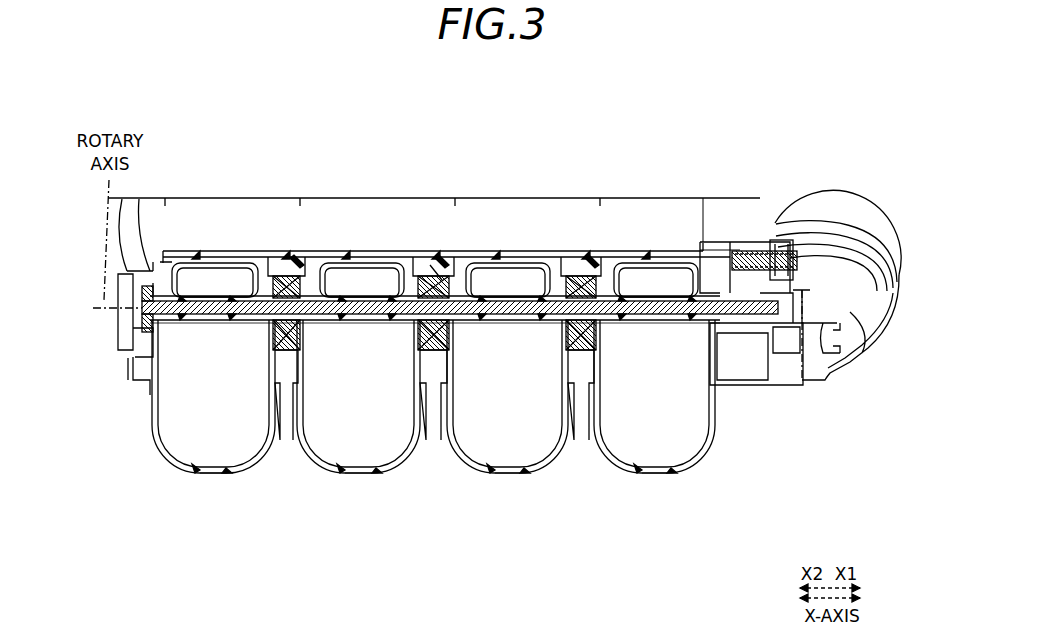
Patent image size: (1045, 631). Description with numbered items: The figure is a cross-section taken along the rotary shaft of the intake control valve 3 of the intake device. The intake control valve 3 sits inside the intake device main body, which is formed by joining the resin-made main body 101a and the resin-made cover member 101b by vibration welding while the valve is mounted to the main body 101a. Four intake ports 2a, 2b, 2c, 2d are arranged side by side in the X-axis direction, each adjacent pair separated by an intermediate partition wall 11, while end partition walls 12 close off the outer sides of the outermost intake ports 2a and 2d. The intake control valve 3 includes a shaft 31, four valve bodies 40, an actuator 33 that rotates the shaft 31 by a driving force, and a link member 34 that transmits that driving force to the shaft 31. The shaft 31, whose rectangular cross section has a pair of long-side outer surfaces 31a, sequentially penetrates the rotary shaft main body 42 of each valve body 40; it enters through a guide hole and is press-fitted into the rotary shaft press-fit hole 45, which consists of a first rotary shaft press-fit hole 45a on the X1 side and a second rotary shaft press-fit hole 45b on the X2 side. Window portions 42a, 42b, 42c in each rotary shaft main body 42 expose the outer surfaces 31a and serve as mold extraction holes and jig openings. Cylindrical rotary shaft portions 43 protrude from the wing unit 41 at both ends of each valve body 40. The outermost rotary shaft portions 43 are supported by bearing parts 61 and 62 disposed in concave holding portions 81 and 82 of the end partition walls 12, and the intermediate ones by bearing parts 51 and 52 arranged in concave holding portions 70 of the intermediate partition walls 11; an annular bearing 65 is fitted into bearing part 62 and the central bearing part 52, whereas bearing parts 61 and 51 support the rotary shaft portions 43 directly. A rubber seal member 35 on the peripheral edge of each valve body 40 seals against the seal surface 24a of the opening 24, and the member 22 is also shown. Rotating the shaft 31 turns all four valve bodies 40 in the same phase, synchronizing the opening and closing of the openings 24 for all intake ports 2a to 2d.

The intake control valve 3 is at (862, 187).
The intermediate partition wall 11 is at (286, 442).
The end partition wall 12 is at (140, 360).
The roller bottom 22 is at (265, 474).
The opening 24 is at (283, 252).
The seal surface 24a is at (206, 324).
The intake port 2a is at (652, 476).
The intake port 2b is at (503, 476).
The intake port 2c is at (356, 476).
The intake port 2d is at (206, 476).
The shaft 31 is at (823, 243).
The outer surface 31a is at (700, 248).
The actuator 33 is at (843, 235).
The link member 34 is at (800, 385).
The seal member 35 is at (180, 255).
The valve body 40 is at (442, 200).
The wing unit 41 is at (438, 219).
The rotary shaft main body 42 is at (168, 332).
The window portion 42a is at (350, 324).
The window portion 42b is at (256, 270).
The window portion 42c is at (208, 263).
The rotary shaft portion 43 is at (118, 333).
The rotary shaft press-fit hole 45 is at (435, 308).
The first rotary shaft press-fit hole 45a is at (252, 400).
The second rotary shaft press-fit hole 45b is at (435, 440).
The bearing part 51 is at (292, 278).
The bearing part 52 is at (440, 278).
The bearing part 61 is at (745, 250).
The bearing part 62 is at (131, 268).
The annular bearing 65 is at (170, 262).
The concave holding portion 70 is at (303, 262).
The concave holding portion 81 is at (782, 240).
The concave holding portion 82 is at (135, 395).
The main body 101a is at (128, 360).
The cover member 101b is at (152, 262).